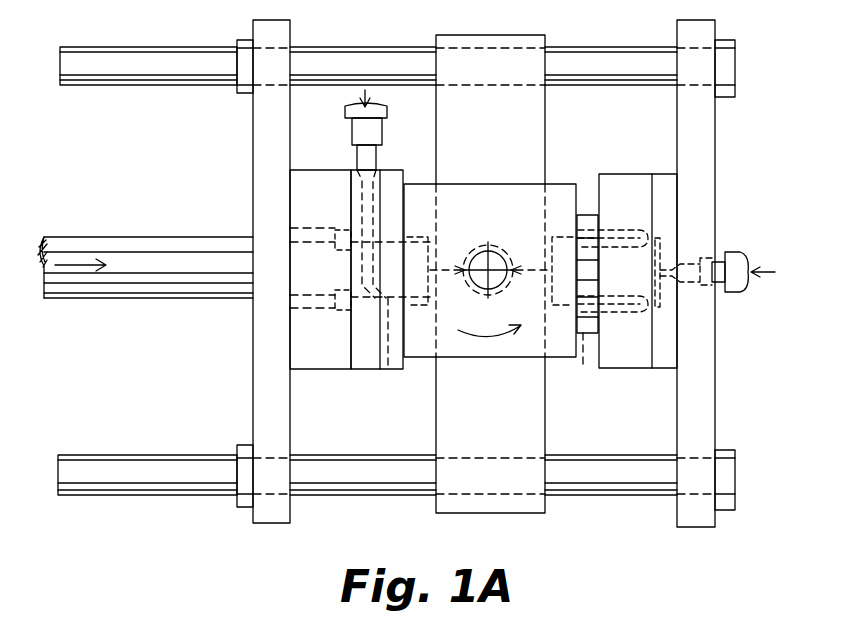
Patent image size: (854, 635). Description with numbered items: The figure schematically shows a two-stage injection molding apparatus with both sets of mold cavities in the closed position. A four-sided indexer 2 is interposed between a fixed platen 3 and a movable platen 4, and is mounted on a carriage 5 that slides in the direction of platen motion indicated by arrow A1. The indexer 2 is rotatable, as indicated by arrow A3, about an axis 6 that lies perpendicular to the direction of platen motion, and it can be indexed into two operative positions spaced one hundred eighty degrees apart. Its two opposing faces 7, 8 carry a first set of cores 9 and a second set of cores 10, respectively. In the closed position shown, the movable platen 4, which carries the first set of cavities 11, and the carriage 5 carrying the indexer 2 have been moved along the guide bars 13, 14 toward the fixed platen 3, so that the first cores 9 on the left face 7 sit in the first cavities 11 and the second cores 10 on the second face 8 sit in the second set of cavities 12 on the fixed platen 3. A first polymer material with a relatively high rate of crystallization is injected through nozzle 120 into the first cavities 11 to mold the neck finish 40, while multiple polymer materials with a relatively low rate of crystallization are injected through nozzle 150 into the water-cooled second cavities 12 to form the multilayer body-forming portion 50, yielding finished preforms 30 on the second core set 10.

The four-sided indexer 2 is at (556, 183).
The fixed platen 3 is at (697, 528).
The movable platen 4 is at (268, 524).
The carriage 5 is at (487, 514).
The axis 6 is at (491, 268).
The first face 7 is at (402, 190).
The second face 8 is at (581, 193).
The first set of cores 9 is at (337, 290).
The second set of cores 10 is at (613, 260).
The first set of cavities 11 is at (338, 372).
The second set of cavities 12 is at (640, 370).
The guide bar 13 is at (137, 494).
The guide bar 14 is at (153, 52).
The finished preform 30 is at (620, 222).
The neck finish 40 is at (389, 372).
The body-forming portion 50 is at (625, 340).
The nozzle 120 is at (353, 133).
The nozzle 150 is at (678, 268).
The platen motion arrow A1 is at (78, 262).
The indexer rotation arrow A3 is at (486, 338).